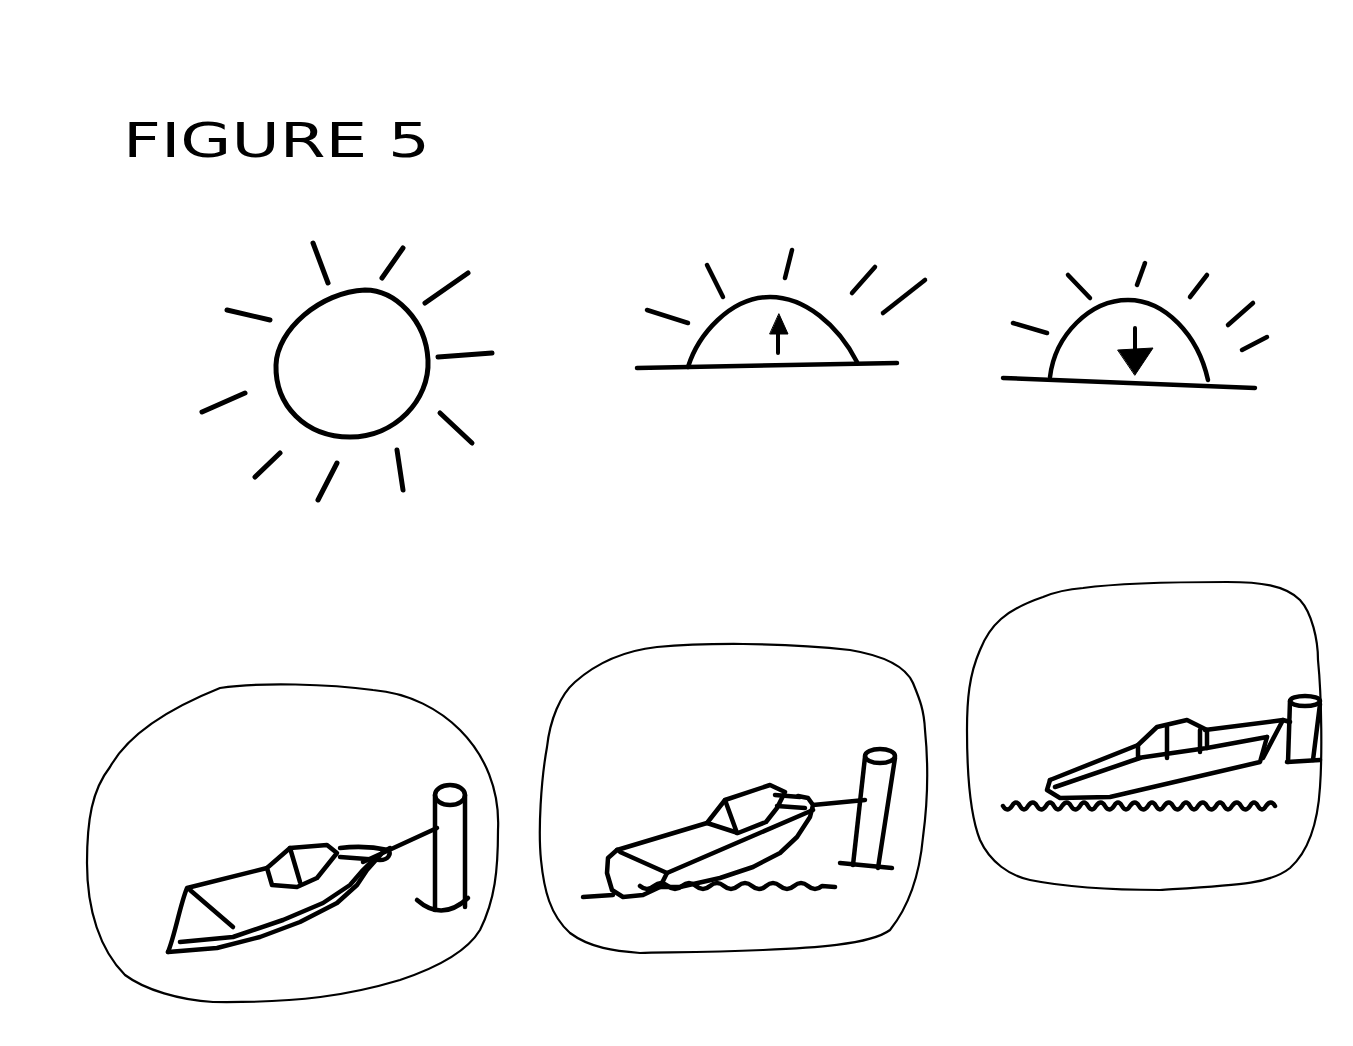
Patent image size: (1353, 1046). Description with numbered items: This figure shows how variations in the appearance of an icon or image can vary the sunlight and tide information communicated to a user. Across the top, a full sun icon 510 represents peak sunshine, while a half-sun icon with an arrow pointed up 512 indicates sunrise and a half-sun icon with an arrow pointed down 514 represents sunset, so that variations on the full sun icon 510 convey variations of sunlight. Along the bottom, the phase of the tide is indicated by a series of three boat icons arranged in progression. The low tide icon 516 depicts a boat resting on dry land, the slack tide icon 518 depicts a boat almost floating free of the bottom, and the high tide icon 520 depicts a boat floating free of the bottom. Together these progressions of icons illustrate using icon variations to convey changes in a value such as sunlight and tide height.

The full sun icon 510 is at (378, 330).
The half-sun icon with arrow pointed up 512 is at (810, 322).
The half-sun icon with arrow pointed down 514 is at (1160, 320).
The low tide icon 516 is at (373, 688).
The slack tide icon 518 is at (743, 642).
The high tide icon 520 is at (1103, 588).